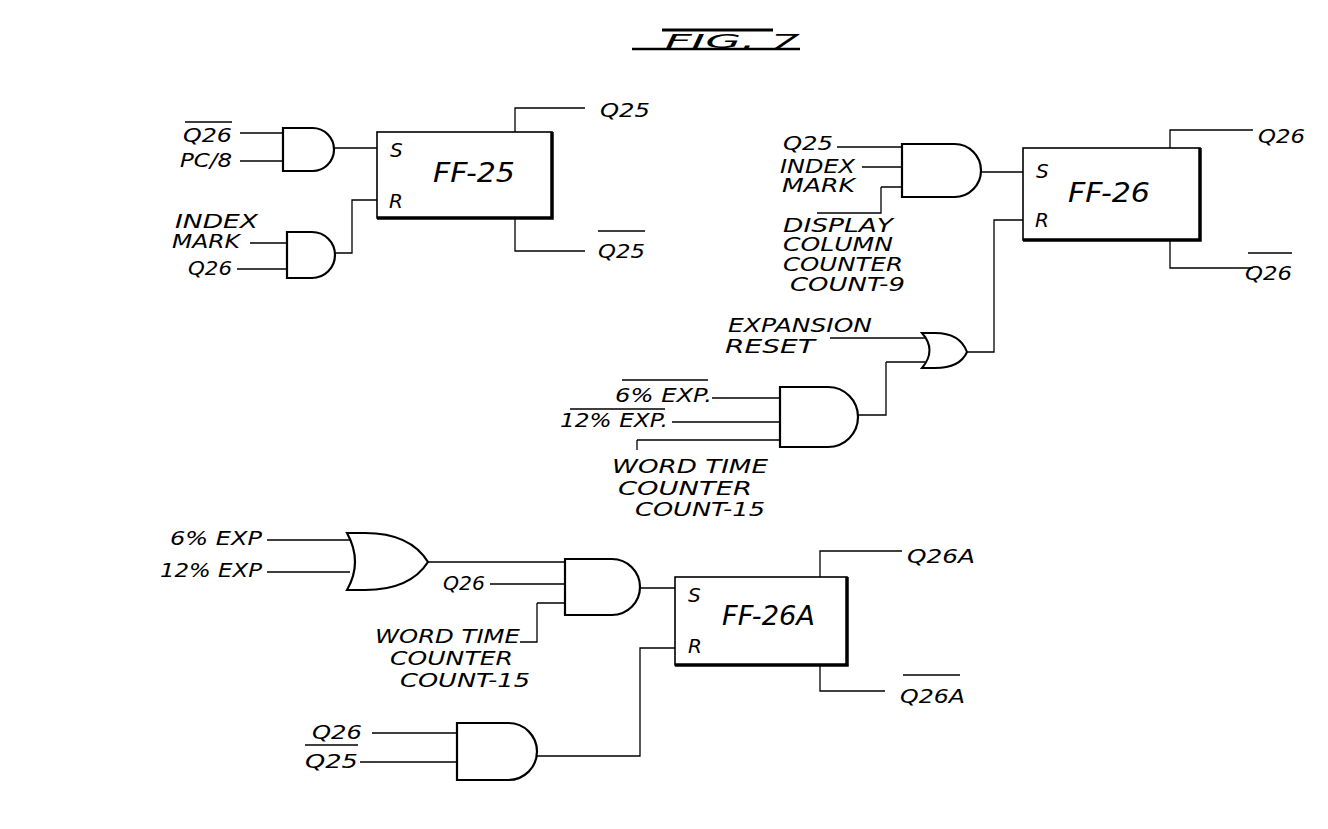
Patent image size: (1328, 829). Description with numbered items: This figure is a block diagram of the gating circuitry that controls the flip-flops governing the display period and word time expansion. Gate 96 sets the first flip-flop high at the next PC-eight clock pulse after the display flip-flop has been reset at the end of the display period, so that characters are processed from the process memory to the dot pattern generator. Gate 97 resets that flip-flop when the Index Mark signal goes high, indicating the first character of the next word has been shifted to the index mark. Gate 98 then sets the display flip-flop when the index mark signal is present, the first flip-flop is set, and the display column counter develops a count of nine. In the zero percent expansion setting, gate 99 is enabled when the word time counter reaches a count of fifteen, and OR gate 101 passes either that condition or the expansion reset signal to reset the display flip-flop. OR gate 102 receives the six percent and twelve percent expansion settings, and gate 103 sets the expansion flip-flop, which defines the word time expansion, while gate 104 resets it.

The gate 96 is at (324, 112).
The gate 97 is at (307, 278).
The gate 98 is at (970, 122).
The gate 99 is at (832, 447).
The OR gate 101 is at (952, 368).
The OR gate 102 is at (407, 510).
The gate 103 is at (615, 540).
The gate 104 is at (497, 780).